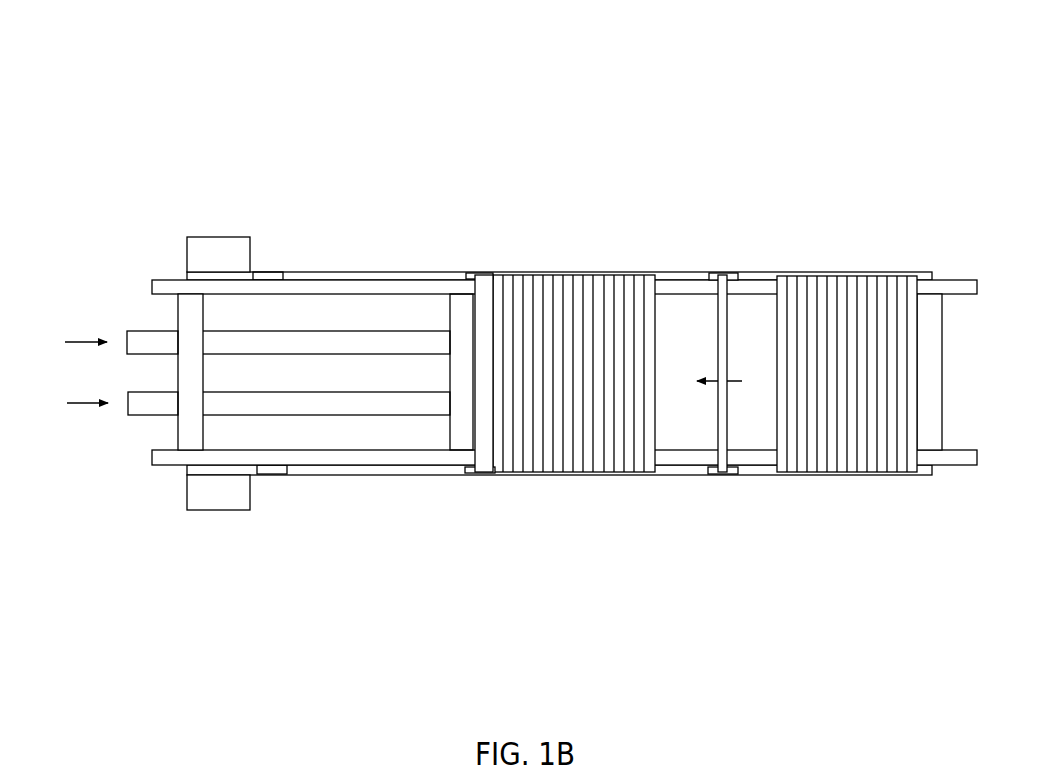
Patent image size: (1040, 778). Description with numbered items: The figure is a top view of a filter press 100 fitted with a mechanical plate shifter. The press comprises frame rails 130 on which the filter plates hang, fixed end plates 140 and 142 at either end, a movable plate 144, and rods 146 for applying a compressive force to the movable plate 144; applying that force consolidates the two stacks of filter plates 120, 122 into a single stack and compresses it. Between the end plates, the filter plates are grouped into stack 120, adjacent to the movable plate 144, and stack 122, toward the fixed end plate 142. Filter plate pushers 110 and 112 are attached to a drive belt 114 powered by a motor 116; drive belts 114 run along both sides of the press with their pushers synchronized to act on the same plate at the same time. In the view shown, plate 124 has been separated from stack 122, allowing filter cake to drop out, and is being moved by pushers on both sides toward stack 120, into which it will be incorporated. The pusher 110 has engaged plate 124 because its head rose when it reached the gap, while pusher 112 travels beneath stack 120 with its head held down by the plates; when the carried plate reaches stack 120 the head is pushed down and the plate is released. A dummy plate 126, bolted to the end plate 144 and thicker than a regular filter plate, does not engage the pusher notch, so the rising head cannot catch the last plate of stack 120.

The filter press 100 is at (425, 118).
The filter plate pusher 110 is at (737, 470).
The filter plate pusher 112 is at (467, 468).
The drive belt 114 is at (368, 277).
The motor 116 is at (210, 250).
The stack of filter plates 120 is at (525, 298).
The stack of filter plates 122 is at (895, 297).
The filter plate 124 is at (755, 377).
The dummy plate 126 is at (505, 343).
The frame rail 130 is at (327, 287).
The fixed end plate 140 is at (187, 313).
The fixed end plate 142 is at (927, 402).
The movable plate 144 is at (463, 320).
The rod 146 is at (145, 410).